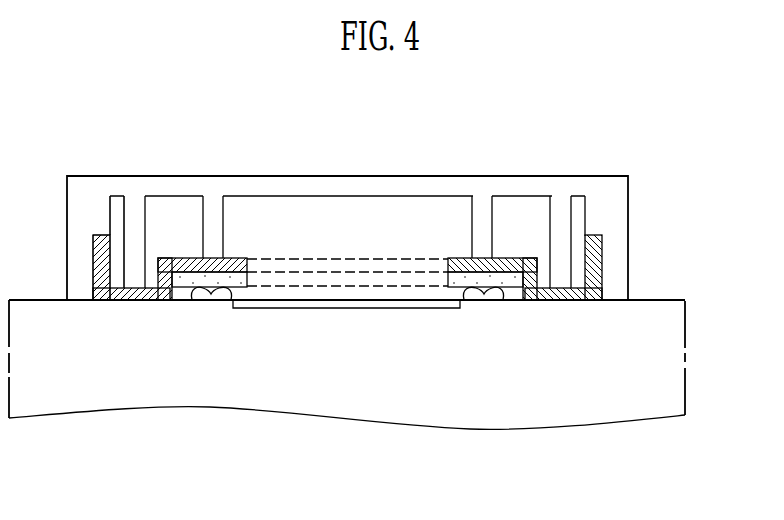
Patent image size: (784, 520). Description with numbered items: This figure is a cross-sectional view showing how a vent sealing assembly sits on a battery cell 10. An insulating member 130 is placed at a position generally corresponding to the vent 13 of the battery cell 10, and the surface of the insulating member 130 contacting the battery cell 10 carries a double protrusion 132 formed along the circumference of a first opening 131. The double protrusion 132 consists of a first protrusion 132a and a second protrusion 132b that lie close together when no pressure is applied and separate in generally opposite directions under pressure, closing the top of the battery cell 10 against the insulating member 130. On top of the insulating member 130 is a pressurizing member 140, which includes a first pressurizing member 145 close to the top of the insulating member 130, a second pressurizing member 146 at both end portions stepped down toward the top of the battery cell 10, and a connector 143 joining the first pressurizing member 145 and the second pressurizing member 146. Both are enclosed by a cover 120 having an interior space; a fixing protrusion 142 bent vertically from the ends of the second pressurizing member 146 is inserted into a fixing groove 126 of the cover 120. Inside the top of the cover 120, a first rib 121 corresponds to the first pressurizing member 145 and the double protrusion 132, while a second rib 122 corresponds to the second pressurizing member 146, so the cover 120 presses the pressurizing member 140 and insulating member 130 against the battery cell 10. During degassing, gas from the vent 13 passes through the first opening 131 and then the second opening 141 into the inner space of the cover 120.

The battery cell 10 is at (668, 375).
The vent 13 is at (312, 308).
The cover 120 is at (339, 206).
The first rib 121 is at (213, 210).
The second rib 122 is at (135, 208).
The fixing groove 126 is at (102, 235).
The insulating member 130 is at (357, 380).
The first opening 131 is at (355, 279).
The double protrusion 132 is at (221, 387).
The first protrusion 132a is at (228, 284).
The second protrusion 132b is at (198, 296).
The pressurizing member 140 is at (384, 293).
The second opening 141 is at (412, 264).
The fixing protrusion 142 is at (97, 267).
The connector 143 is at (160, 279).
The first pressurizing member 145 is at (238, 260).
The second pressurizing member 146 is at (122, 291).